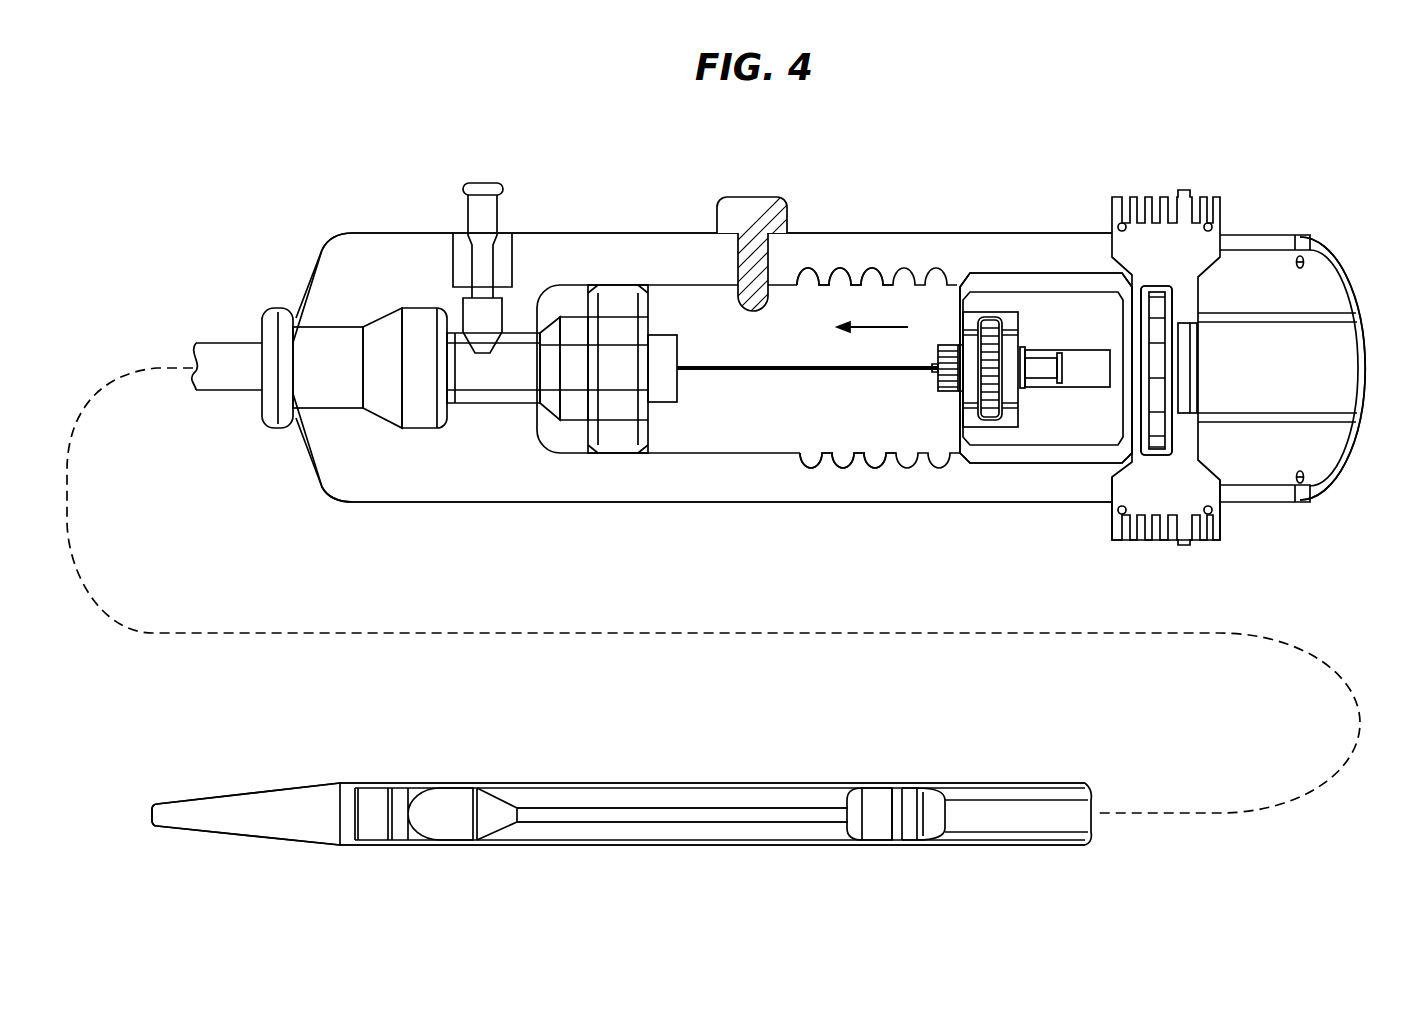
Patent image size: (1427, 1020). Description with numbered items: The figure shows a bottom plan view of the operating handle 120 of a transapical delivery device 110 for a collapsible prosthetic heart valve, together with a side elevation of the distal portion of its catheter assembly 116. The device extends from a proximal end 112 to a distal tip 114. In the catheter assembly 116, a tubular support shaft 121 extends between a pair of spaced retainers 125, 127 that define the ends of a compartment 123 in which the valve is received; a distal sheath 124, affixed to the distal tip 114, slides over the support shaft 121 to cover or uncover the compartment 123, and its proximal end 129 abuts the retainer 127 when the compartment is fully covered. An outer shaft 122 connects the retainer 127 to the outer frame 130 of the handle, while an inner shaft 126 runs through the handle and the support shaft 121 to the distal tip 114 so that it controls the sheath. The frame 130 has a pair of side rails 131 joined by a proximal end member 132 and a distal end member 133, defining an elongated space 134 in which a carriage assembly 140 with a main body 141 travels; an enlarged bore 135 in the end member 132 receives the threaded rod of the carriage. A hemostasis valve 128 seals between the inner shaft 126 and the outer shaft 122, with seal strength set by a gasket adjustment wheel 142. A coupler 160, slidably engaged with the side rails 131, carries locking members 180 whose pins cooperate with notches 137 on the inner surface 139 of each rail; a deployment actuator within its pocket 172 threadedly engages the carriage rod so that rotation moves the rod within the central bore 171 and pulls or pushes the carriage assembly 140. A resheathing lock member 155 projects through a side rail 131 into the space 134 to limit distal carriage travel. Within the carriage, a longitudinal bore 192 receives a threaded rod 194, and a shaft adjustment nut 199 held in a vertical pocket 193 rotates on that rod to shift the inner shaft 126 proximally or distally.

The transapical delivery device 110 is at (268, 166).
The proximal end 112 is at (1337, 478).
The distal tip 114 is at (150, 814).
The catheter assembly 116 is at (662, 748).
The operating handle 120 is at (1308, 168).
The tubular support shaft 121 is at (1158, 295).
The outer shaft 122 is at (225, 392).
The compartment 123 is at (672, 832).
The distal sheath 124 is at (540, 782).
The retainer 125 is at (450, 842).
The inner shaft 126 is at (712, 372).
The retainer 127 is at (847, 835).
The hemostasis valve 128 is at (520, 332).
The proximal end of distal sheath 129 is at (900, 843).
The outer frame 130 is at (1041, 228).
The side rails 131 is at (970, 233).
The proximal end member 132 is at (1325, 268).
The distal end member 133 is at (370, 233).
The elongated space 134 is at (800, 422).
The enlarged bore 135 is at (1277, 367).
The notches 137 is at (877, 457).
The inner surface 139 is at (712, 285).
The carriage assembly 140 is at (1008, 468).
The main body 141 is at (1068, 463).
The gasket adjustment wheel 142 is at (615, 297).
The resheathing lock member 155 is at (762, 200).
The coupler 160 is at (1158, 537).
The central bore 171 is at (1207, 350).
The pocket 172 is at (1157, 453).
The locking members 180 is at (1184, 190).
The longitudinal bore 192 is at (952, 410).
The pocket 193 is at (993, 427).
The threaded rod 194 is at (940, 345).
The shaft adjustment nut 199 is at (990, 352).